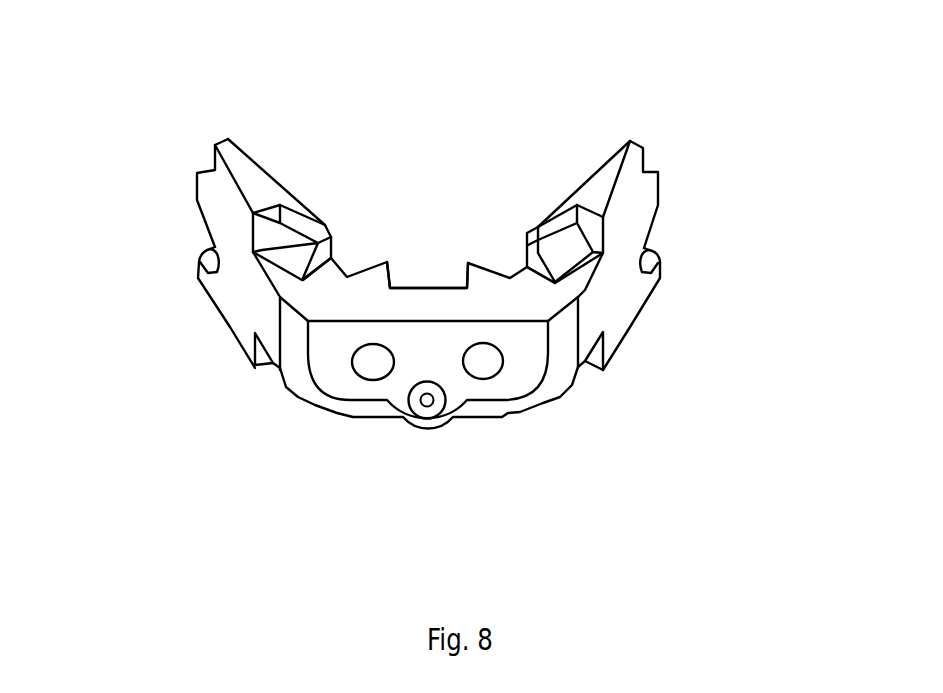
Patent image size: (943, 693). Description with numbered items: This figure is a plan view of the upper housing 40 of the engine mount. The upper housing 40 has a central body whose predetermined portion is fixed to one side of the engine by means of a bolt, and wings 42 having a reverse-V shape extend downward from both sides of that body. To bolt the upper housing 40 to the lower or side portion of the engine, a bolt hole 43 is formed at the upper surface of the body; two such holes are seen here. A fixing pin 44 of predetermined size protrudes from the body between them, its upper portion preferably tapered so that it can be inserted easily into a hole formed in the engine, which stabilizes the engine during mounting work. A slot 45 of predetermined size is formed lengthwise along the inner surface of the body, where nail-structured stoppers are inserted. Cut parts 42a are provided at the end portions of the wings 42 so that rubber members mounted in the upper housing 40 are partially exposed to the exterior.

The upper housing 40 is at (730, 135).
The wings 42 is at (250, 180).
The cut parts 42a is at (200, 243).
The bolt hole 43 is at (367, 360).
The fixing pin 44 is at (428, 412).
The slot 45 is at (433, 280).